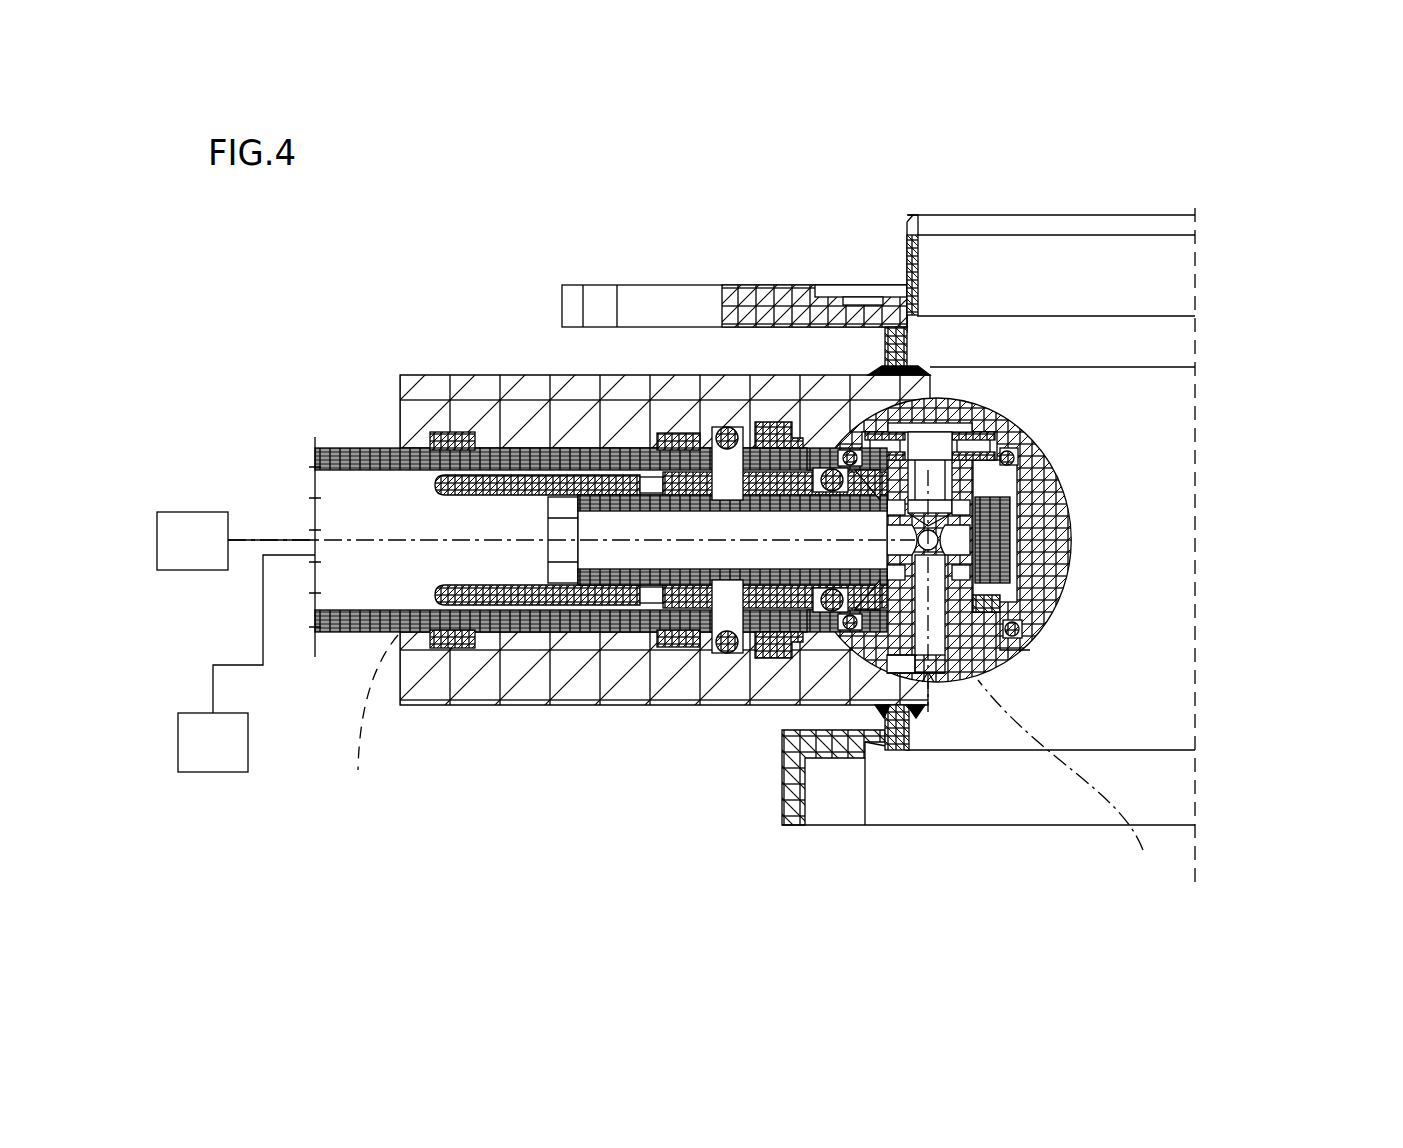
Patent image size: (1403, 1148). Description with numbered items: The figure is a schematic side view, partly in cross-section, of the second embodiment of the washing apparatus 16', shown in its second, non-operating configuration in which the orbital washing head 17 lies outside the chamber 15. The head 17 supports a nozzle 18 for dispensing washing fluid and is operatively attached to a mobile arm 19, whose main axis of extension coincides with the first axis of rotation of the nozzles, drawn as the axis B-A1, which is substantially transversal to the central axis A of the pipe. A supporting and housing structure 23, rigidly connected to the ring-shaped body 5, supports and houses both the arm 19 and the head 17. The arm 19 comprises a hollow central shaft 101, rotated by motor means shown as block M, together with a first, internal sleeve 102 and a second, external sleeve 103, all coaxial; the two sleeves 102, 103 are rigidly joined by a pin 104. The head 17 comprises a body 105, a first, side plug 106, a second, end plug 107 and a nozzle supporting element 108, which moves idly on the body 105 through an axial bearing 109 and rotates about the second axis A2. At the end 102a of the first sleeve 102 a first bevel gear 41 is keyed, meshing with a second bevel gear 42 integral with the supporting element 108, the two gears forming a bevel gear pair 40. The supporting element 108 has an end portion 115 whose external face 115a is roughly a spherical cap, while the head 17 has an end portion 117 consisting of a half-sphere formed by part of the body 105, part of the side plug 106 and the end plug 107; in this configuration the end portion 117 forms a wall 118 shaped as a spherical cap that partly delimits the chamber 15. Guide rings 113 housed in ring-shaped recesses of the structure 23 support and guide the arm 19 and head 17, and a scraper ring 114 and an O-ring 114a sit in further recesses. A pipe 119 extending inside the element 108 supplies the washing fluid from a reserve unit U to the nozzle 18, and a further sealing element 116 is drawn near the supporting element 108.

The ring-shaped body 5 is at (917, 337).
The chamber 15 is at (1142, 688).
The washing apparatus 16' is at (1131, 633).
The orbital washing head 17 is at (1045, 442).
The nozzle 18 is at (868, 690).
The mobile arm 19 is at (560, 627).
The structure 23 is at (942, 382).
The bevel gear pair 40 is at (853, 495).
The first bevel gear 41 is at (892, 390).
The second bevel gear 42 is at (1005, 592).
The hollow central shaft 101 is at (580, 462).
The first, internal sleeve 102 is at (603, 505).
The end of the first sleeve 102a is at (747, 620).
The second, external sleeve 103 is at (345, 455).
The pin 104 is at (720, 478).
The body 105 is at (845, 440).
The first, side plug 106 is at (1004, 403).
The second, end plug 107 is at (1055, 518).
The nozzle supporting element 108 is at (1000, 690).
The axial bearing 109 is at (1032, 425).
The guide ring 113 is at (430, 440).
The scraper ring 114 is at (767, 420).
The O-ring 114a is at (710, 648).
The end portion 115 is at (922, 705).
The external face 115a is at (1040, 682).
The sealing element 116 is at (1019, 665).
The end portion 117 is at (1064, 491).
The wall 118 is at (1071, 543).
The pipe 119 is at (945, 690).
The central axis A is at (1197, 848).
The second axis A2 is at (1069, 783).
The main axis of extension and first axis of rotation B-A1 is at (365, 720).
The reserve unit U is at (236, 541).
The motor means M is at (246, 663).